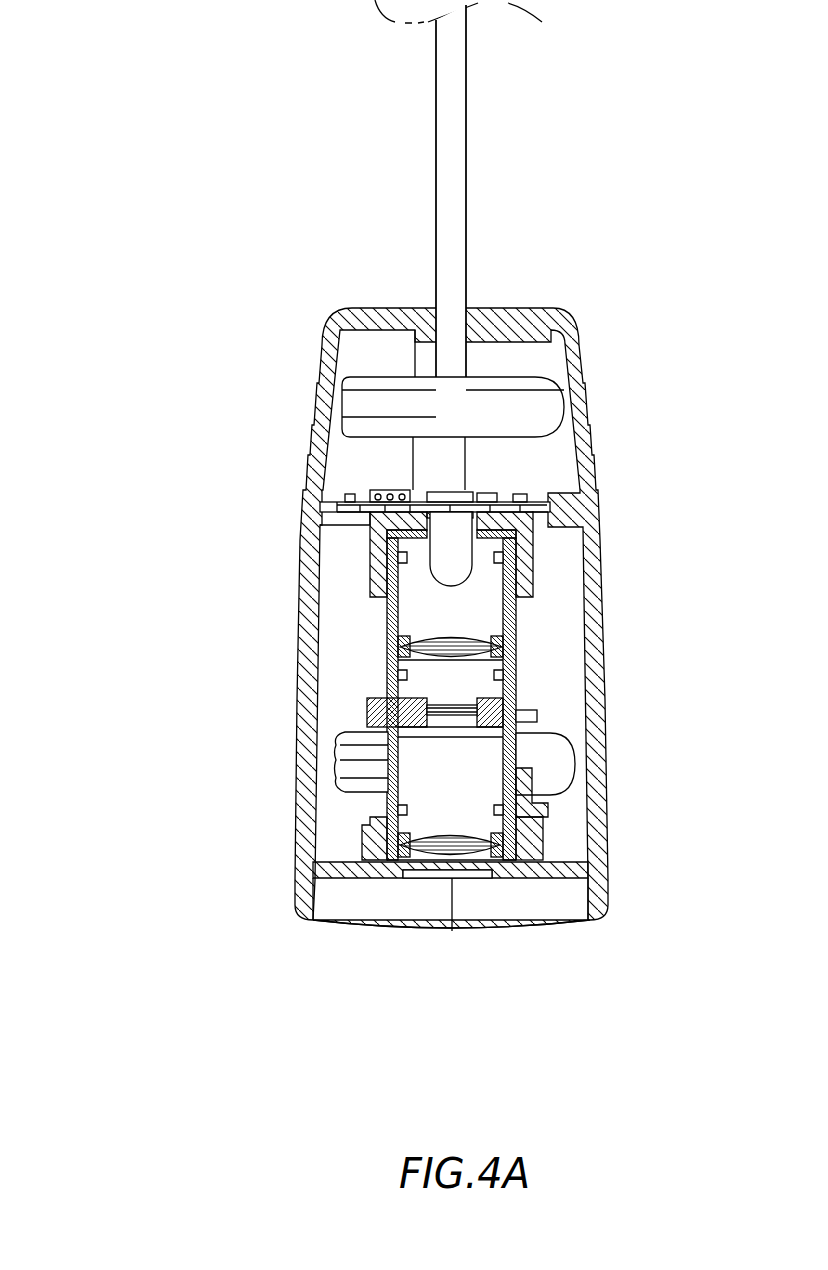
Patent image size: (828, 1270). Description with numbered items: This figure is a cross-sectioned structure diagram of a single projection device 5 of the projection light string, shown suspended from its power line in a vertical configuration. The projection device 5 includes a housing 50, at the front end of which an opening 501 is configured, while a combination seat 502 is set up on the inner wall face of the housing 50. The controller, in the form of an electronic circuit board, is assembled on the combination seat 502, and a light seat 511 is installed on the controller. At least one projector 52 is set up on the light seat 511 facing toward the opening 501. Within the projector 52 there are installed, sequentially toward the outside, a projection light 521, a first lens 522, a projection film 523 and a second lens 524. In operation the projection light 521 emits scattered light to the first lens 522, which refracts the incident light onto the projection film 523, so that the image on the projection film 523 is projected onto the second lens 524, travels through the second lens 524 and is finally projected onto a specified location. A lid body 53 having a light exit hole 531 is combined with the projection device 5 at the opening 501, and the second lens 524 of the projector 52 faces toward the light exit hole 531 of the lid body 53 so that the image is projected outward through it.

The projection device 5 is at (363, 510).
The housing 50 is at (372, 512).
The opening 501 is at (330, 925).
The combination seat 502 is at (335, 500).
The light seat 511 is at (377, 555).
The projector 52 is at (305, 686).
The projection light 521 is at (453, 578).
The first lens 522 is at (413, 643).
The projection film 523 is at (452, 717).
The second lens 524 is at (440, 837).
The lid body 53 is at (456, 941).
The light exit hole 531 is at (497, 880).